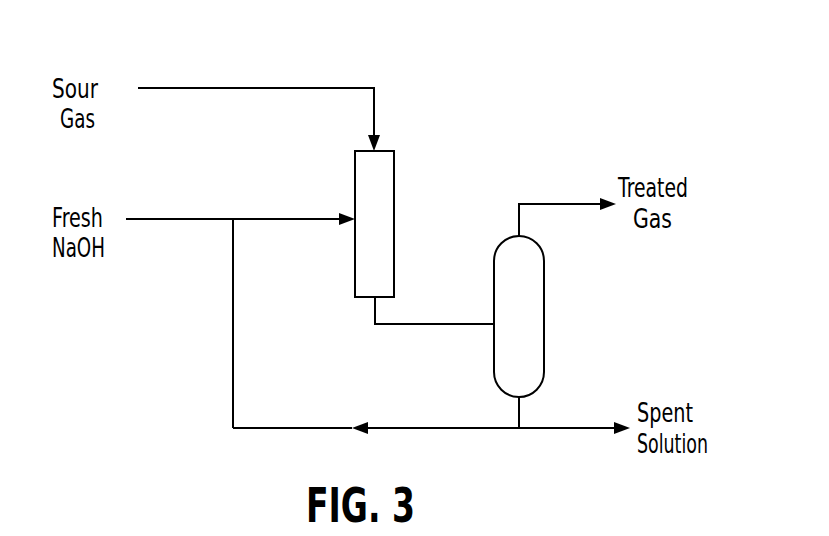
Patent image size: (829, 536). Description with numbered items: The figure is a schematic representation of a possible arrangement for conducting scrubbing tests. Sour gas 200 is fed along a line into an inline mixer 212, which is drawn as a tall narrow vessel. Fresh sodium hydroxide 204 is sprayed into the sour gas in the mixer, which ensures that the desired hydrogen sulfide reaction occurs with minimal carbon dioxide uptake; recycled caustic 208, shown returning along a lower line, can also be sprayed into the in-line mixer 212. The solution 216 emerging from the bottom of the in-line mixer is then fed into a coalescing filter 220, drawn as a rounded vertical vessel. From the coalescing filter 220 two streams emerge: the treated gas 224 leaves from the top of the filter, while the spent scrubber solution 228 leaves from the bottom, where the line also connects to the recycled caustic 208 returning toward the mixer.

The sour gas 200 is at (284, 88).
The fresh sodium hydroxide 204 is at (176, 219).
The recycled caustic 208 is at (333, 428).
The inline mixer 212 is at (394, 170).
The solution 216 is at (447, 324).
The coalescing filter 220 is at (544, 310).
The treated gas 224 is at (558, 204).
The spent scrubber solution 228 is at (570, 428).